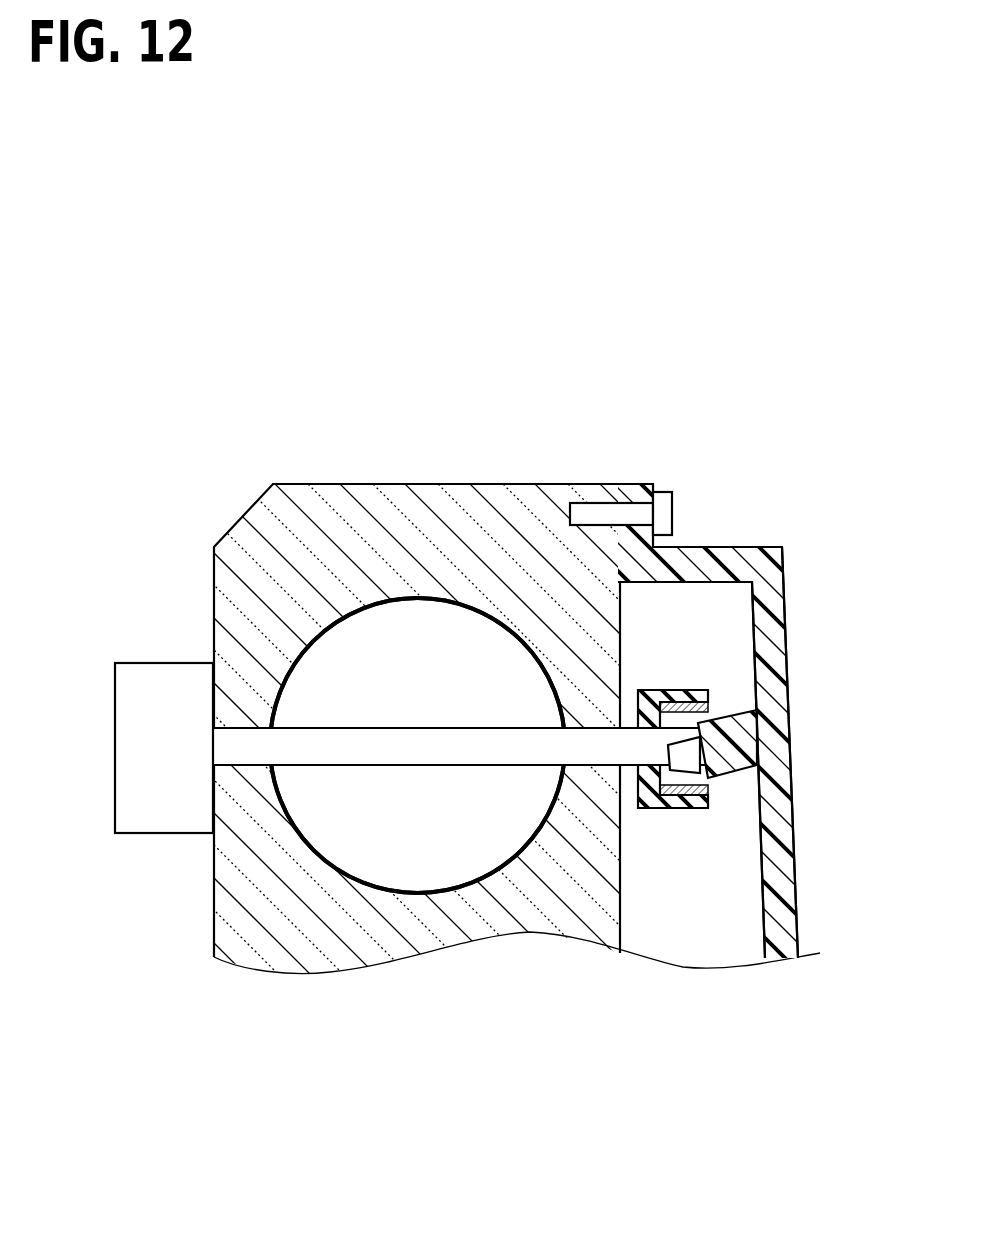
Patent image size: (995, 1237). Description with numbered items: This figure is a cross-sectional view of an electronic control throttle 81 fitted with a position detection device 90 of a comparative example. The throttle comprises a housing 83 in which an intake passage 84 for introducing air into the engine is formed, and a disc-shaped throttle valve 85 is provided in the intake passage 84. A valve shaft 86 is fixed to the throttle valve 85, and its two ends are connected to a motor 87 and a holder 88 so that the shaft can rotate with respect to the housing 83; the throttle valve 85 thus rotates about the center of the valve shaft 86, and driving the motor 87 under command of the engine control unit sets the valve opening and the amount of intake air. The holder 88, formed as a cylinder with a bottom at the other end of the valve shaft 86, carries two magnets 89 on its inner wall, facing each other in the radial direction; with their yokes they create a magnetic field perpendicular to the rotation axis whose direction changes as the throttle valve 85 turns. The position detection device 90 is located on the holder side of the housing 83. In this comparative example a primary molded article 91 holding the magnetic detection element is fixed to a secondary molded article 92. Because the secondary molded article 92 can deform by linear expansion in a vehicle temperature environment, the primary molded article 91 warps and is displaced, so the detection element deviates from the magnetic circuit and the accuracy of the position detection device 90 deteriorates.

The electronic control throttle 81 is at (760, 388).
The housing 83 is at (304, 577).
The intake passage 84 is at (482, 846).
The throttle valve 85 is at (417, 672).
The valve shaft 86 is at (345, 748).
The motor 87 is at (160, 663).
The holder 88 is at (648, 808).
The magnets 89 is at (672, 705).
The position detection device 90 is at (785, 655).
The primary molded article 91 is at (690, 752).
The secondary molded article 92 is at (780, 603).